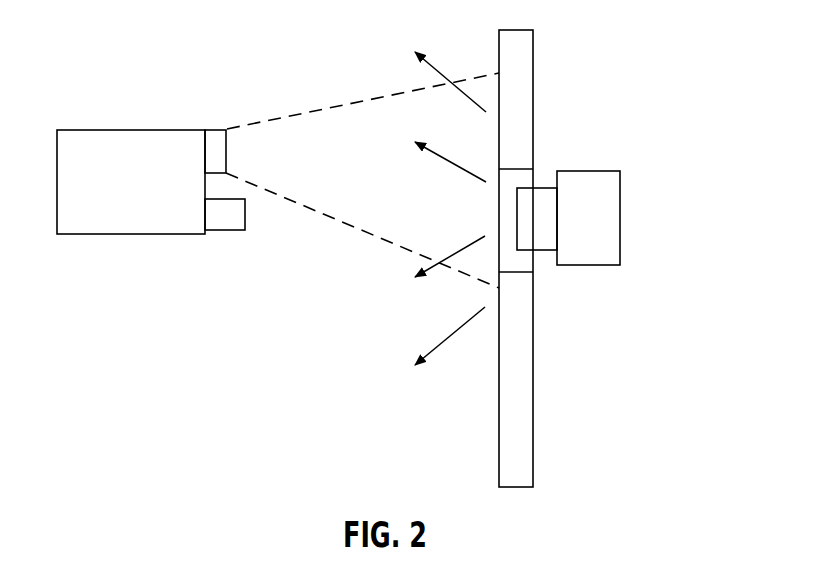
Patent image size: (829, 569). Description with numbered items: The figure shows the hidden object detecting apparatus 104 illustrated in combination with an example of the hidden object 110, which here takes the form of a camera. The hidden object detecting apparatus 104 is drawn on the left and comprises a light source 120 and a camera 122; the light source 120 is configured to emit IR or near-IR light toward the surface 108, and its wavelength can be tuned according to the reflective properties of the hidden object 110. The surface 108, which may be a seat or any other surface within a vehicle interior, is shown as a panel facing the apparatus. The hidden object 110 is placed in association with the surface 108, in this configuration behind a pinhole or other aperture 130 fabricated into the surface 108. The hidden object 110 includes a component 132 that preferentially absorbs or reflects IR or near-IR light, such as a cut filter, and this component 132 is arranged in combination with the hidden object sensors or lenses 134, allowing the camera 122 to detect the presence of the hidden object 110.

The hidden object detecting apparatus 104 is at (142, 129).
The surface 108 is at (524, 44).
The hidden object 110 is at (620, 171).
The light source 120 is at (225, 232).
The camera 122 is at (248, 126).
The aperture 130 is at (528, 223).
The component 132 is at (512, 273).
The hidden object sensors or lenses 134 is at (535, 188).